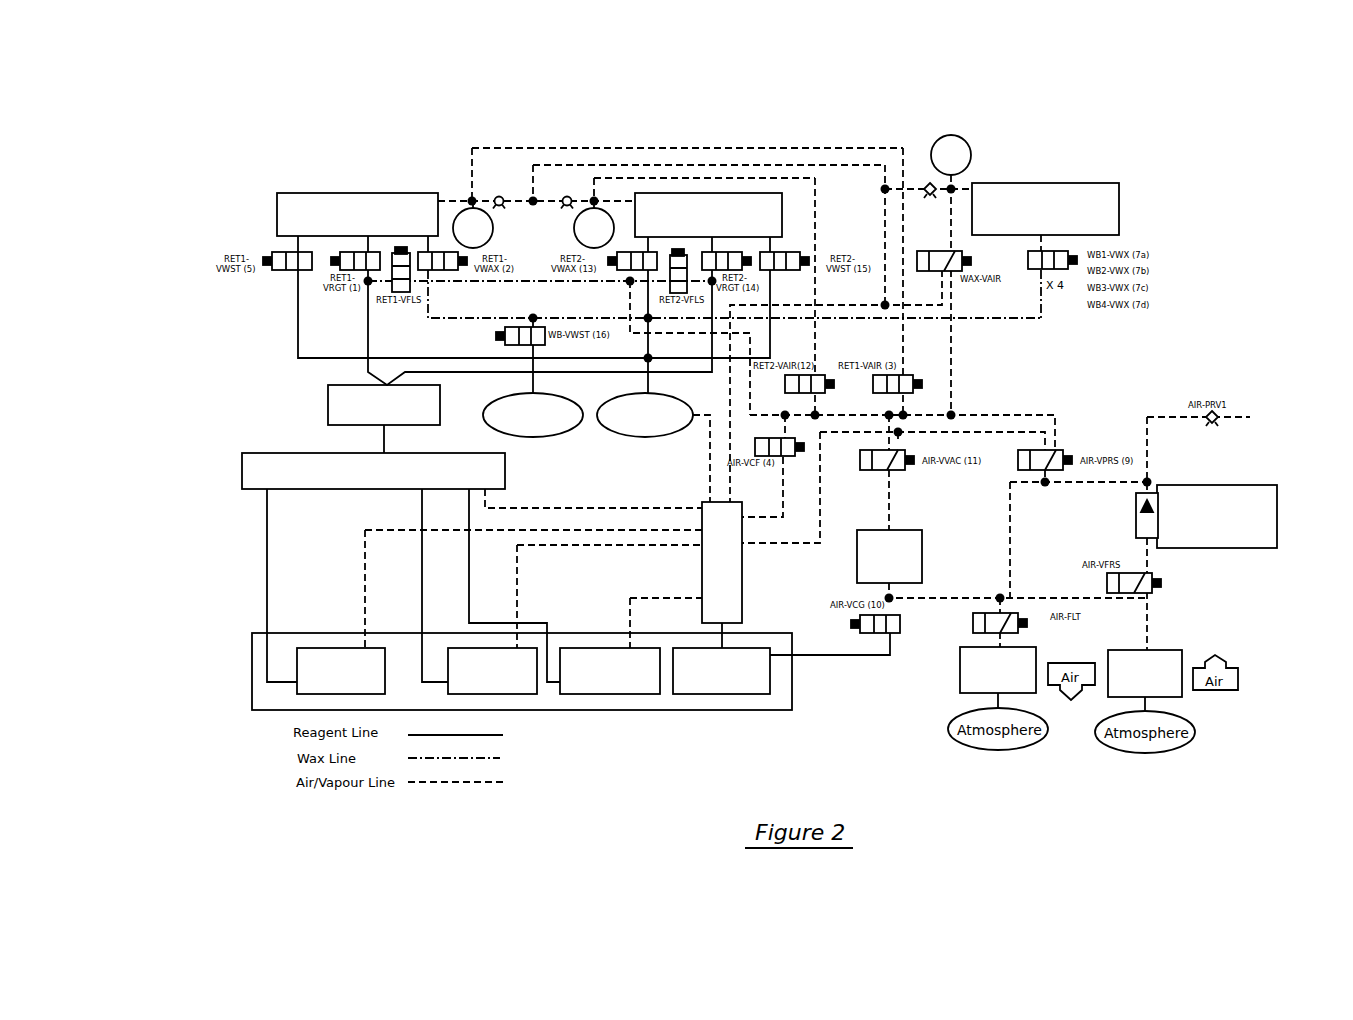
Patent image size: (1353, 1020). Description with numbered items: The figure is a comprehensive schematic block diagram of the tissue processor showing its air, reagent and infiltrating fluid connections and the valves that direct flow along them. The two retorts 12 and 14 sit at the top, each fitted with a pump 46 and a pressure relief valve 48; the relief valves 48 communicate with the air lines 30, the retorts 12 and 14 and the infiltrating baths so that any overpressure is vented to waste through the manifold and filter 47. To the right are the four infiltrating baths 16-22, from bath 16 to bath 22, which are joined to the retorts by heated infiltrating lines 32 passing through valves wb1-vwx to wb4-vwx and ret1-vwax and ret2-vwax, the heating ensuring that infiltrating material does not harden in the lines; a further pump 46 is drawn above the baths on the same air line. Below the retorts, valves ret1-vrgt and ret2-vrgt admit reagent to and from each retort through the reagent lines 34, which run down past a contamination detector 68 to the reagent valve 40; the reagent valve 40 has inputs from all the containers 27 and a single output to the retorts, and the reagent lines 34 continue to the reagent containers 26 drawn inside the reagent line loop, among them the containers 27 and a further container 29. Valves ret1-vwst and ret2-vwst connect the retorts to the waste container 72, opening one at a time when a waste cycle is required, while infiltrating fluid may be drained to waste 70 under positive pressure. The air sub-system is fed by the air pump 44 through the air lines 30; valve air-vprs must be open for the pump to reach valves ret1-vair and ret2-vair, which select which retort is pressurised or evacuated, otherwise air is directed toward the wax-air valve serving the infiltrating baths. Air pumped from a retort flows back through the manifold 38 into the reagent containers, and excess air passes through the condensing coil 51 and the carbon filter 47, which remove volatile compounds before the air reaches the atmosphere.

The retort 12 is at (357, 214).
The retort 14 is at (708, 215).
The infiltrating baths 16-22 is at (1084, 208).
The infiltrating bath 16 is at (1084, 208).
The infiltrating bath 22 is at (1119, 203).
The pump 46 is at (944, 137).
The pressure relief valves 48 is at (927, 178).
The infiltrating lines 32 is at (1041, 318).
The air lines 30 is at (1055, 415).
The air pump 44 is at (1277, 520).
The condensing coil 51 is at (922, 560).
The manifold 38 is at (742, 590).
The reagent valve 40 is at (242, 453).
The reagent lines 34 is at (266, 565).
The contamination detector 68 is at (328, 405).
The waste 70 is at (533, 415).
The waste container 72 is at (645, 415).
The containers 26 is at (622, 712).
The containers 27 is at (537, 728).
The reagent container 29 is at (728, 692).
The carbon filter 47 is at (958, 685).